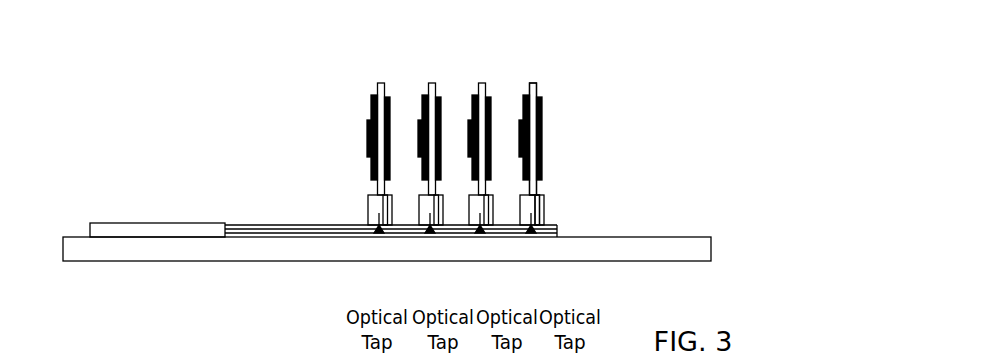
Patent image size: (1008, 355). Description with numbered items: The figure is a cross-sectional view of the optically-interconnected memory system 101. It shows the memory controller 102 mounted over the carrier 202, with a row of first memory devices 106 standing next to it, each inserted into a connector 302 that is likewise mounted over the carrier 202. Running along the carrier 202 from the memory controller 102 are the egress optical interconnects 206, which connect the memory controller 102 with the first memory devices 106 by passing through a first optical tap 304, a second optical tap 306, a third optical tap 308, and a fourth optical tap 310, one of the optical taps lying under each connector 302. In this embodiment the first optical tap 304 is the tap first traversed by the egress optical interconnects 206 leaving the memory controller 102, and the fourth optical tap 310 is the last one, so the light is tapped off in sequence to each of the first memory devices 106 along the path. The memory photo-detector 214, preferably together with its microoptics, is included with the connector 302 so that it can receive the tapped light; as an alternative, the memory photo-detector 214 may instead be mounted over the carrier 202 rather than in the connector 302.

The optically-interconnected memory system 101 is at (166, 81).
The memory controller 102 is at (133, 232).
The first memory devices 106 is at (380, 88).
The carrier 202 is at (700, 258).
The egress optical interconnects 206 is at (298, 222).
The memory photo-detector 214 is at (529, 194).
The connector 302 is at (548, 210).
The first optical tap 304 is at (384, 233).
The second optical tap 306 is at (435, 233).
The third optical tap 308 is at (485, 233).
The fourth optical tap 310 is at (536, 233).